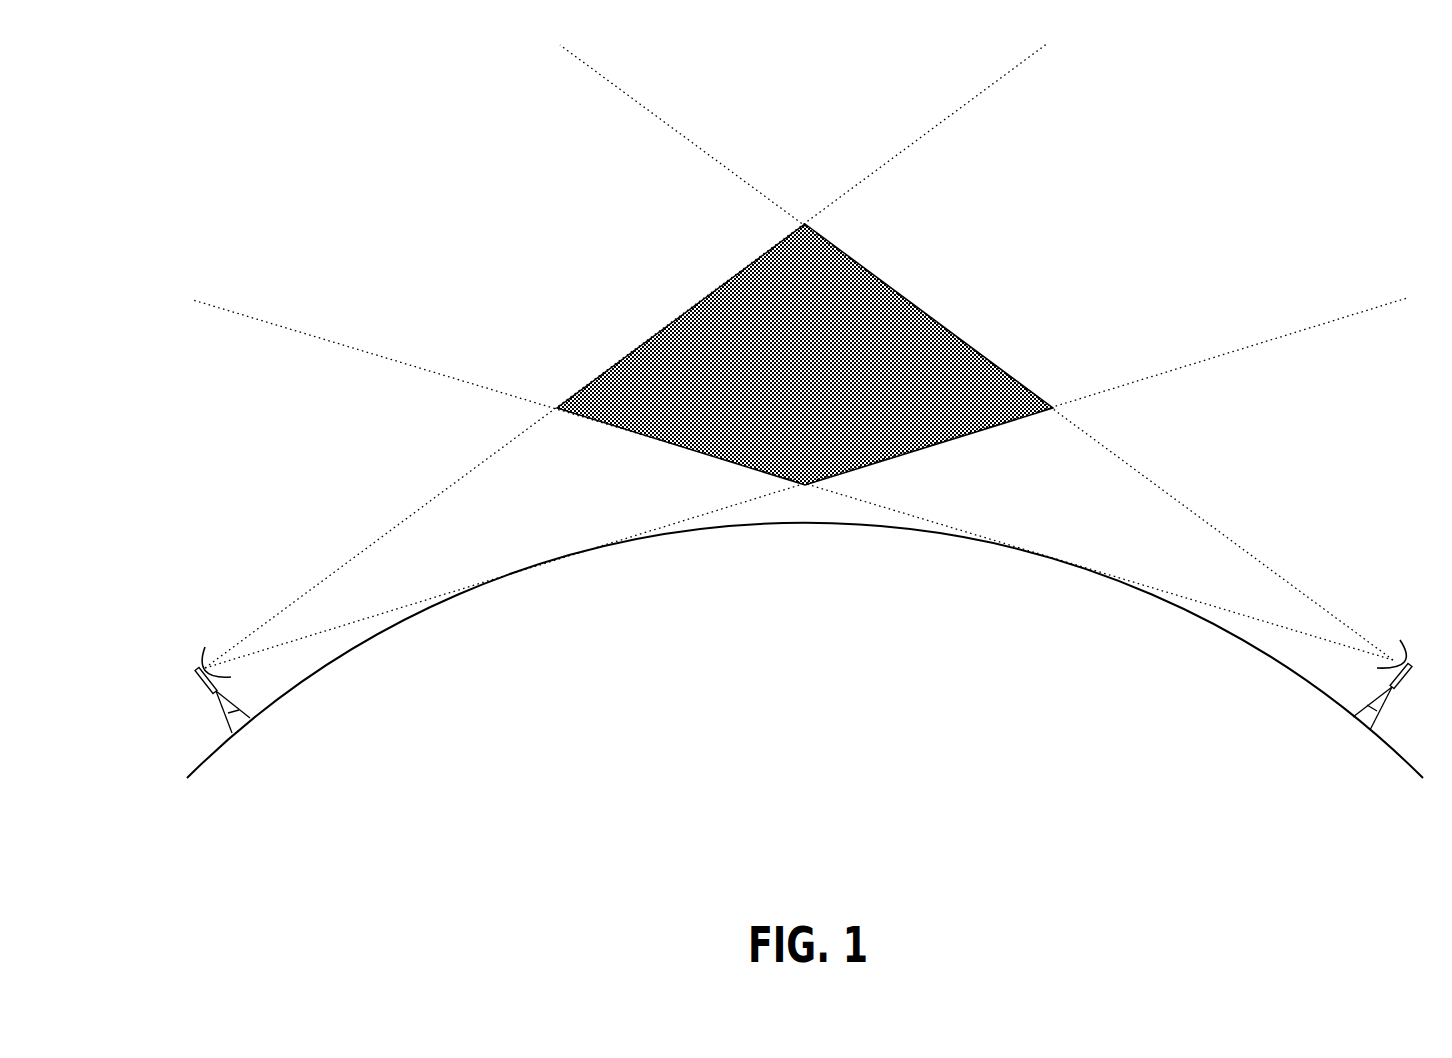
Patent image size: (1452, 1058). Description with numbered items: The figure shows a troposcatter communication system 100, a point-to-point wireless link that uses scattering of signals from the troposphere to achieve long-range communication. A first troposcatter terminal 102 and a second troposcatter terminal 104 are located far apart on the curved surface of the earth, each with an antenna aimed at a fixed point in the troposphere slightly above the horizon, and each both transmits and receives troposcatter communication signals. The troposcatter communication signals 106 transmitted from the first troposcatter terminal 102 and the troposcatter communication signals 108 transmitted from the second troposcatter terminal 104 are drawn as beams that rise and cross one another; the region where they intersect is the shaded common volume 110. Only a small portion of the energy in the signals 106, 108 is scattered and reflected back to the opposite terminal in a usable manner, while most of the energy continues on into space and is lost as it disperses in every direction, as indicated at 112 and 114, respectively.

The troposcatter communication system 100 is at (252, 70).
The first troposcatter terminal 102 is at (190, 712).
The second troposcatter terminal 104 is at (1346, 688).
The troposcatter communication signals transmitted from the first troposcatter termi 106 is at (806, 355).
The troposcatter communication signals transmitted from the second troposcatter term 108 is at (793, 352).
The common volume 110 is at (805, 354).
The dispersed energy of the first terminal's signals 112 is at (1049, 240).
The dispersed energy of the second terminal's signals 114 is at (507, 240).